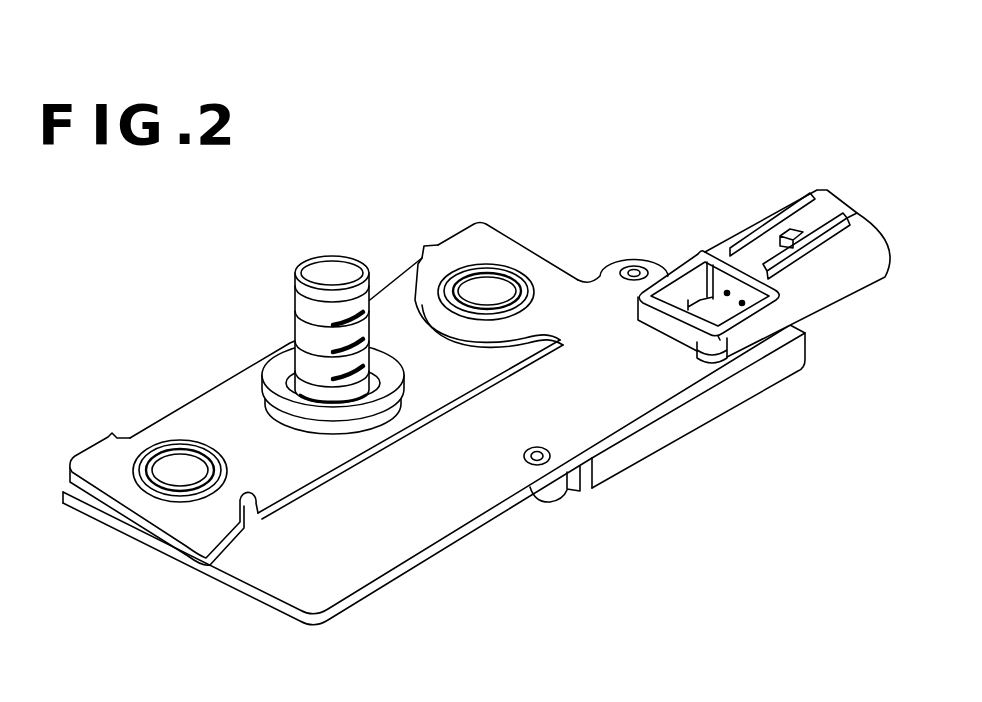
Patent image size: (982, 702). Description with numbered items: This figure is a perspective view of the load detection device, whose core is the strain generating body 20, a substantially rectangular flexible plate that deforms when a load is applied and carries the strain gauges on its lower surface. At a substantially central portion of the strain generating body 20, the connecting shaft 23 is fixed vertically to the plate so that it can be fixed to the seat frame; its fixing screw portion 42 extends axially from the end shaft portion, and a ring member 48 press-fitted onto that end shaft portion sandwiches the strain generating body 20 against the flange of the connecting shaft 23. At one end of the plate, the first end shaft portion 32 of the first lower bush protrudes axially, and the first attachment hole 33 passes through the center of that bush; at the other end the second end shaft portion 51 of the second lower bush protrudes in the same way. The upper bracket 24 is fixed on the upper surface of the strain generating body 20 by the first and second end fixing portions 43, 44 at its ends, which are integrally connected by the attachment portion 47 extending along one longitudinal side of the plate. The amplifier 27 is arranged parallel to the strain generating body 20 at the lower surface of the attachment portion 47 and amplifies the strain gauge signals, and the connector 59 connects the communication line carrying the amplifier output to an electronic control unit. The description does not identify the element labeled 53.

The strain generating body 20 is at (393, 293).
The connecting shaft 23 is at (328, 270).
The upper bracket 24 is at (310, 590).
The amplifier 27 is at (642, 447).
The first end shaft portion 32 is at (150, 487).
The first attachment hole 33 is at (179, 466).
The fixing screw portion 42 is at (297, 310).
The first end fixing portion 43 is at (97, 457).
The second end fixing portion 44 is at (458, 242).
The attachment portion 47 is at (487, 475).
The ring member 48 is at (263, 368).
The second end shaft portion 51 is at (490, 287).
The ring 53 is at (513, 270).
The connector 59 is at (840, 290).